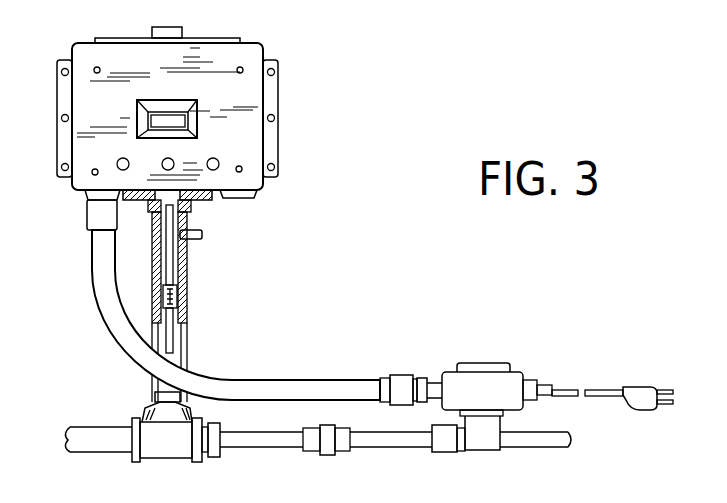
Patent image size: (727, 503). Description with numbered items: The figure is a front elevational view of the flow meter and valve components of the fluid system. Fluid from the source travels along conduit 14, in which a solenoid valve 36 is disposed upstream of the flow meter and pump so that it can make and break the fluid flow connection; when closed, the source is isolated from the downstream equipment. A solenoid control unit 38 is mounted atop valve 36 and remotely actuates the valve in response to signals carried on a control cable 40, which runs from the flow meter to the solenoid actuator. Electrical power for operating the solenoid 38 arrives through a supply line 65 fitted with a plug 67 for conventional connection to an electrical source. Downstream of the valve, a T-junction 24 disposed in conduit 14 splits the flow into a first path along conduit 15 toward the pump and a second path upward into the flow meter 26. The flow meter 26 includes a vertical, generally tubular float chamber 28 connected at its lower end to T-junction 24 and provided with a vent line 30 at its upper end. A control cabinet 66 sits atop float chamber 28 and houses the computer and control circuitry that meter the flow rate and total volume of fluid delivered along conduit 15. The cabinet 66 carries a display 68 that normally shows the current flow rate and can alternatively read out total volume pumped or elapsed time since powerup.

The flow meter 26 is at (267, 34).
The control cabinet 66 is at (112, 60).
The display 68 is at (190, 100).
The float chamber 28 is at (186, 258).
The vent line 30 is at (202, 234).
The T-junction 24 is at (168, 462).
The conduit 15 is at (92, 437).
The conduit 14 is at (538, 440).
The control cable 40 is at (260, 388).
The solenoid control unit 38 is at (482, 385).
The solenoid valve 36 is at (482, 440).
The supply line 65 is at (570, 388).
The plug 67 is at (645, 392).